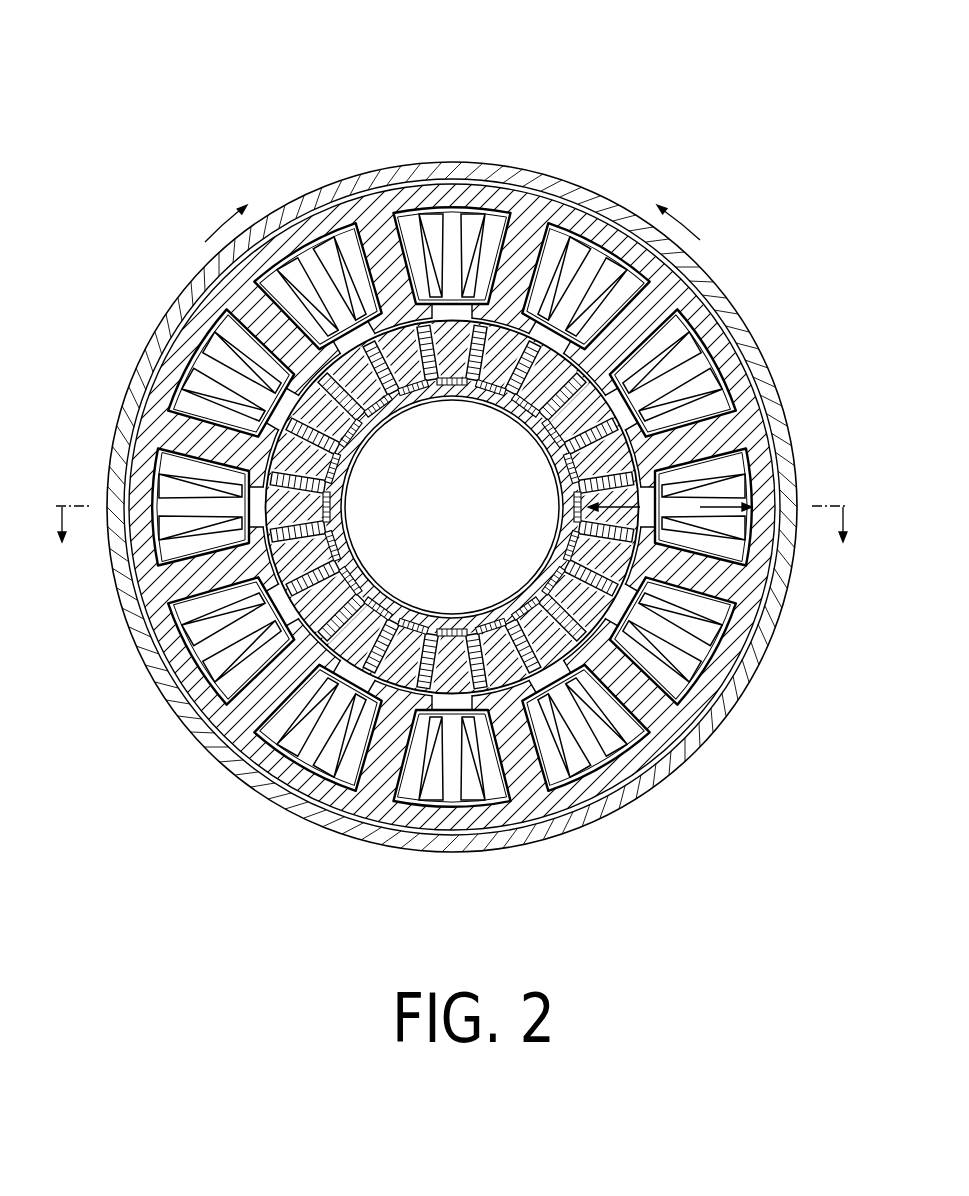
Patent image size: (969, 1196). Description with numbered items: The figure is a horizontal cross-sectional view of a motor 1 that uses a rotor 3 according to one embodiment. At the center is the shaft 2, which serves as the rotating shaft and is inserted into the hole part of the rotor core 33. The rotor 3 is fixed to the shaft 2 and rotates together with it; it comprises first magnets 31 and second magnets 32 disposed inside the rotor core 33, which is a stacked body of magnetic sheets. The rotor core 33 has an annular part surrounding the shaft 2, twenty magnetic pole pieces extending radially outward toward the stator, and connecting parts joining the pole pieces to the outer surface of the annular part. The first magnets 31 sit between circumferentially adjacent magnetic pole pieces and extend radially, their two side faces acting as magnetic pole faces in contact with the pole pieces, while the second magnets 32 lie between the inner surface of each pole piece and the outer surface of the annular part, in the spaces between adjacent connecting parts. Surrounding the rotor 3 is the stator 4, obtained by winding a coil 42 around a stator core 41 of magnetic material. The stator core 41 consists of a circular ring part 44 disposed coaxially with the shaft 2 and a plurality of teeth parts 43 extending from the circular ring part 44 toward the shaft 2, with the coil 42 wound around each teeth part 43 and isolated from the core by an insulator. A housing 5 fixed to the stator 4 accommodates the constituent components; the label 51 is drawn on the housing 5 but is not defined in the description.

The motor 1 is at (684, 89).
The shaft 2 is at (523, 460).
The rotor 3 is at (457, 617).
The first magnet 31 is at (477, 667).
The second magnet 32 is at (527, 610).
The rotor core 33 is at (400, 670).
The stator 4 is at (514, 507).
The stator core 41 is at (501, 507).
The coil 42 is at (712, 524).
The teeth part 43 is at (653, 603).
The circular ring part 44 is at (713, 678).
The housing 5 is at (470, 507).
The housing 51 is at (716, 733).